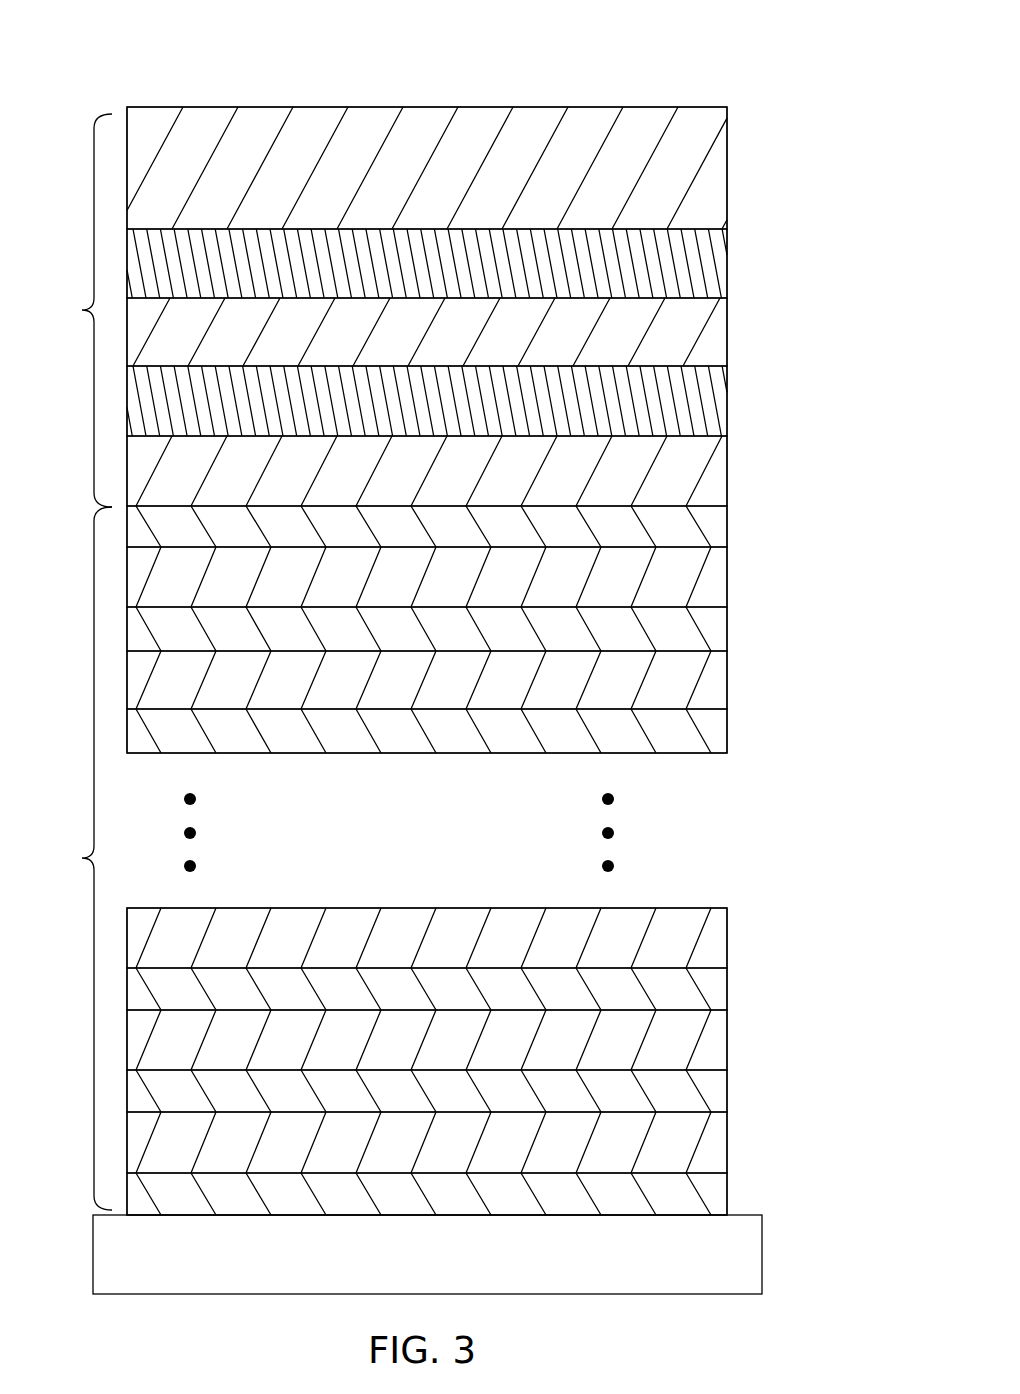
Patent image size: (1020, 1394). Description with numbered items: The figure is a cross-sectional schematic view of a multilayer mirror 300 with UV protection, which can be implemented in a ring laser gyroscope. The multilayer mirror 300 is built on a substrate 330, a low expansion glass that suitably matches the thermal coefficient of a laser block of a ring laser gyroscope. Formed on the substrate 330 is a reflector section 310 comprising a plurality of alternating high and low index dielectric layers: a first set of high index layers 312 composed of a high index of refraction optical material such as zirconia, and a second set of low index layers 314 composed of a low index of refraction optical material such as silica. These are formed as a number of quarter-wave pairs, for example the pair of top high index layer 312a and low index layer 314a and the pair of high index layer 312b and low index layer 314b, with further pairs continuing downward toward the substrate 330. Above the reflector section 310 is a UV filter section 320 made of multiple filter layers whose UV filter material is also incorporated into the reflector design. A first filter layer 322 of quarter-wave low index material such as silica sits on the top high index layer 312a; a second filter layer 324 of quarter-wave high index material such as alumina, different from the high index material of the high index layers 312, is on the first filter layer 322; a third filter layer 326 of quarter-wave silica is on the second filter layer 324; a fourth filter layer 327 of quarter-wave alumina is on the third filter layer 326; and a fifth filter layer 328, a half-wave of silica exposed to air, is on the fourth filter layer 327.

The multilayer mirror 300 is at (741, 77).
The reflector section 310 is at (73, 858).
The high index layers 312 is at (718, 730).
The top high index layer 312a is at (718, 524).
The high index layer 312b is at (718, 630).
The low index layers 314 is at (718, 948).
The low index layer 314a is at (718, 577).
The low index layer 314b is at (718, 682).
The UV filter section 320 is at (74, 310).
The first filter layer 322 is at (718, 471).
The second filter layer 324 is at (718, 408).
The third filter layer 326 is at (718, 335).
The fourth filter layer 327 is at (718, 264).
The fifth filter layer 328 is at (718, 170).
The substrate 330 is at (748, 1257).